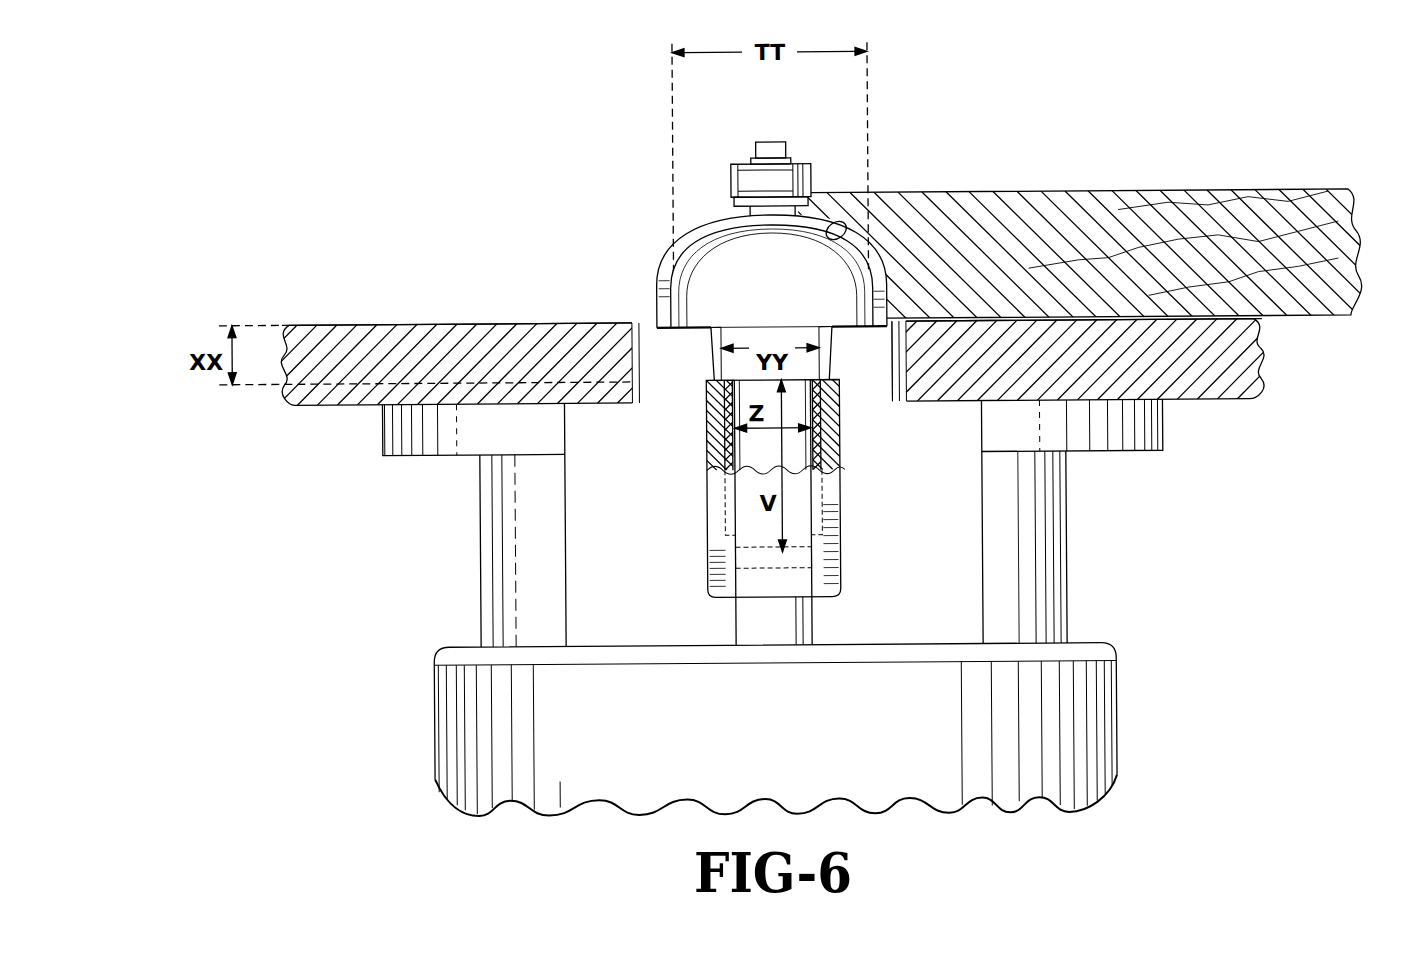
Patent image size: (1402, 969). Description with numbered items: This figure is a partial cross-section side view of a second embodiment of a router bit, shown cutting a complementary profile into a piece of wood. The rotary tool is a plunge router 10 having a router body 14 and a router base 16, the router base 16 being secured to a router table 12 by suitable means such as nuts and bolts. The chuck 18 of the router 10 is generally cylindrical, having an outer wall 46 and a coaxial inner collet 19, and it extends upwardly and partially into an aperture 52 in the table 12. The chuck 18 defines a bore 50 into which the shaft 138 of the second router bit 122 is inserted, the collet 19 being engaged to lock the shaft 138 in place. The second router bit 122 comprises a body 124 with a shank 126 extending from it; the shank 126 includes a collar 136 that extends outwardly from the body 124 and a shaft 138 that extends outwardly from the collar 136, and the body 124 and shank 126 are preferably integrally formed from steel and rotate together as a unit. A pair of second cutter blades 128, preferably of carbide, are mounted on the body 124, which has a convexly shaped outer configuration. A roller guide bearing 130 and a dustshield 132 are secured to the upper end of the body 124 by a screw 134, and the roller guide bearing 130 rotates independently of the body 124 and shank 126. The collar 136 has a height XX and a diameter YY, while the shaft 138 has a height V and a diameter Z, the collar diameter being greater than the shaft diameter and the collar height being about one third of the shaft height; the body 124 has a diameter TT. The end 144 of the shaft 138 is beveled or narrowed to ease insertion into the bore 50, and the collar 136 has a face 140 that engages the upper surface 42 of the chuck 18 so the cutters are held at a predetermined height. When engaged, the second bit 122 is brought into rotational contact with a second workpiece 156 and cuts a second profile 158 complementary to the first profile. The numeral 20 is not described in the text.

The plunge router 10 is at (1145, 618).
The router table 12 is at (1222, 400).
The router body 14 is at (1100, 718).
The router base 16 is at (432, 448).
The chuck 18 is at (857, 505).
The collet 19 is at (740, 470).
The stud 20 is at (772, 630).
The upper surface of chuck 42 is at (732, 385).
The outer wall 46 is at (717, 448).
The bore 50 is at (828, 385).
The aperture 52 is at (862, 387).
The second router bit 122 is at (648, 245).
The body 124 is at (710, 276).
The shank 126 is at (755, 480).
The second cutter blades 128 is at (888, 278).
The roller guide bearing 130 is at (735, 182).
The dustshield 132 is at (737, 206).
The screw 134 is at (774, 147).
The collar 136 is at (770, 335).
The shaft 138 is at (797, 452).
The face 140 is at (712, 415).
The end of shaft 144 is at (845, 562).
The second workpiece 156 is at (1086, 205).
The second profile 158 is at (835, 222).